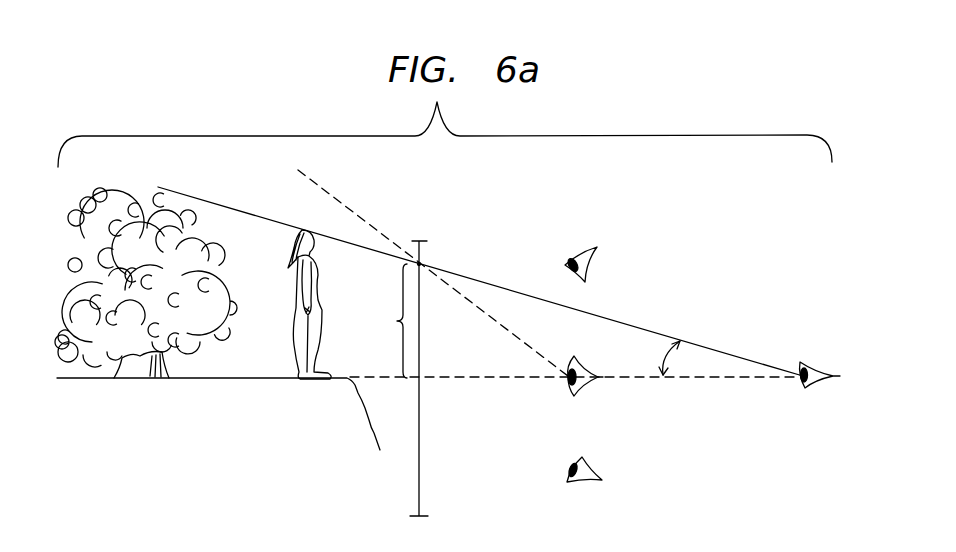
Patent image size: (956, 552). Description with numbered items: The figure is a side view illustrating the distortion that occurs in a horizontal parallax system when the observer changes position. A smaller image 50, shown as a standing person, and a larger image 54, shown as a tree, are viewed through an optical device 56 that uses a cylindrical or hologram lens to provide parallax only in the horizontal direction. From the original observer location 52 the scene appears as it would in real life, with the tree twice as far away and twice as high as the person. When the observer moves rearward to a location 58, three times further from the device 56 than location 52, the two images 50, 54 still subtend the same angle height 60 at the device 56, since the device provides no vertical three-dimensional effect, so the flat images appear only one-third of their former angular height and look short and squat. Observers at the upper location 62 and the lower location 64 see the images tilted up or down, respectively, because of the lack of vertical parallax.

The image 50 is at (321, 296).
The observer location 52 is at (588, 384).
The larger image 54 is at (222, 292).
The optical device 56 is at (428, 257).
The rearward observer location 58 is at (813, 365).
The angle height 60 is at (382, 321).
The upper observer location 62 is at (595, 263).
The lower observer location 64 is at (585, 481).